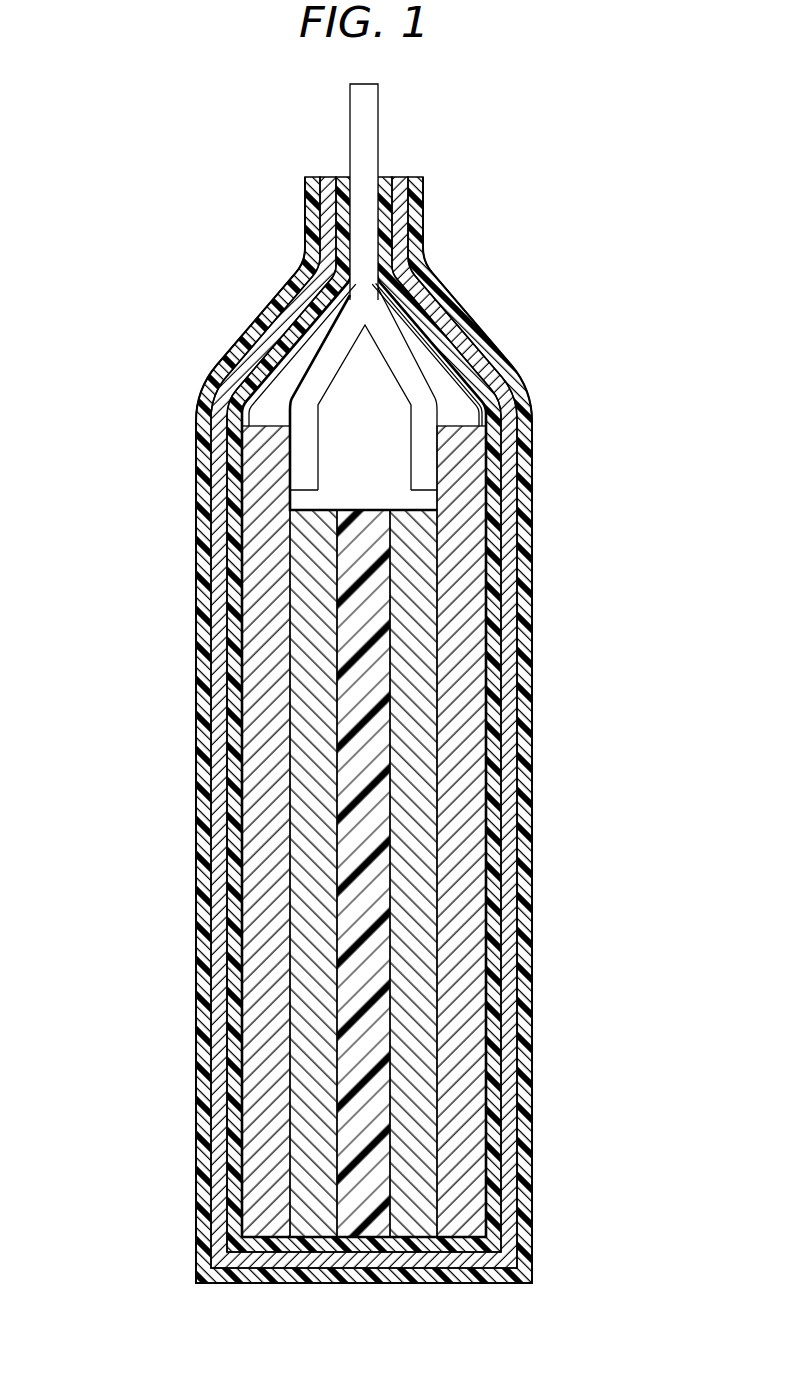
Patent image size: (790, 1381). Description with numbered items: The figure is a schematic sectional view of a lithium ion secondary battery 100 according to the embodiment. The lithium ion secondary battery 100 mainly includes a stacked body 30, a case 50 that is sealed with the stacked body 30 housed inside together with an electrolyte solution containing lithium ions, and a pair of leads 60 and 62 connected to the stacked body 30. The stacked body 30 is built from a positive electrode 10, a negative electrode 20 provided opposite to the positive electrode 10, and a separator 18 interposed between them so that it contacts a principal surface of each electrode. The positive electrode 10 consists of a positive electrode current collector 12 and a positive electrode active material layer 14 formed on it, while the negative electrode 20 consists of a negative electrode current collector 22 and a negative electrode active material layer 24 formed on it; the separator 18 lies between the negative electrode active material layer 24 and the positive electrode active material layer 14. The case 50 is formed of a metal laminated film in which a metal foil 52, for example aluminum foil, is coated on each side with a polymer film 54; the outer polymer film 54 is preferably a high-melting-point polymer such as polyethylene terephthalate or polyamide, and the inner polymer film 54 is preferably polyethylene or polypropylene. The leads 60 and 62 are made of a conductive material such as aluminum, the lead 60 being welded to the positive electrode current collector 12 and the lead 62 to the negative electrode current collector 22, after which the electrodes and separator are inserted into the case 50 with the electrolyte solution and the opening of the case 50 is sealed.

The lithium ion secondary battery 100 is at (608, 119).
The case 50 is at (622, 582).
The polymer film 54 is at (492, 603).
The metal foil 52 is at (508, 630).
The stacked body 30 is at (72, 637).
The positive electrode 10 is at (121, 622).
The positive electrode current collector 12 is at (458, 625).
The positive electrode active material layer 14 is at (412, 680).
The separator 18 is at (367, 720).
The negative electrode 20 is at (121, 743).
The negative electrode current collector 22 is at (268, 803).
The negative electrode active material layer 24 is at (300, 768).
The lead 60 is at (397, 353).
The lead 62 is at (328, 357).